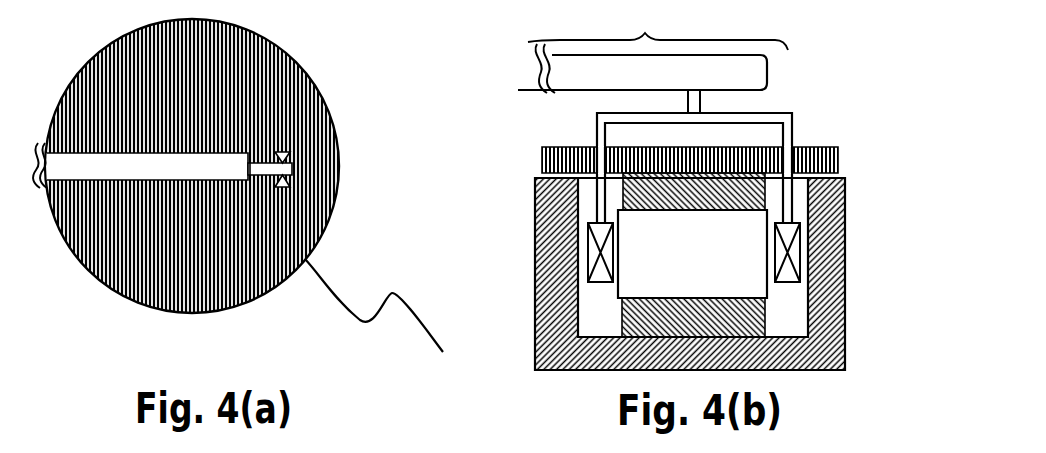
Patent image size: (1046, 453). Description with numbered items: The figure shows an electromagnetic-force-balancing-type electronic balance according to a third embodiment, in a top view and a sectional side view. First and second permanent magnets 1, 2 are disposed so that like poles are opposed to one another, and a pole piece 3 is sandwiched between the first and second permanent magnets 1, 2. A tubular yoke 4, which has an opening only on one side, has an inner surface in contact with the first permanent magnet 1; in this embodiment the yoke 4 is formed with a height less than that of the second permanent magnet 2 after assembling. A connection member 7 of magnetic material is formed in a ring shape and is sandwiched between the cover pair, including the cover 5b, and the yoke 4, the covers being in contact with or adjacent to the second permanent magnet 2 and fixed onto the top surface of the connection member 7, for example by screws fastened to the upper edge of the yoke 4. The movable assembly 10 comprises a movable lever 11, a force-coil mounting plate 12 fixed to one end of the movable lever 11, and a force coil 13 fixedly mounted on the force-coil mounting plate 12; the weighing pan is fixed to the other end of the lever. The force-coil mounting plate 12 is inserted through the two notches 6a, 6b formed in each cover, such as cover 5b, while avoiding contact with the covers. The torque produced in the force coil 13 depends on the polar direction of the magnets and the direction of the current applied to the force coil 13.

In FIG. 4B, the first permanent magnet 1 is at (765, 312).
In FIG. 4B, the second permanent magnet 2 is at (623, 207).
In FIG. 4B, the pole piece 3 is at (758, 275).
In FIG. 4B, the yoke 4 is at (537, 333).
In FIG. 4A, the cover 5b is at (333, 207).
In FIG. 4A, the notch 6a is at (311, 80).
In FIG. 4B, the notch 6a is at (818, 147).
In FIG. 4A, the notch 6b is at (338, 182).
In FIG. 4B, the notch 6b is at (816, 150).
In FIG. 4B, the connection member 7 is at (535, 178).
In FIG. 4B, the movable assembly 10 is at (653, 52).
In FIG. 4B, the movable lever 11 is at (331, 117).
In FIG. 4B, the force-coil mounting plate 12 is at (597, 113).
In FIG. 4B, the force coil 13 is at (597, 255).